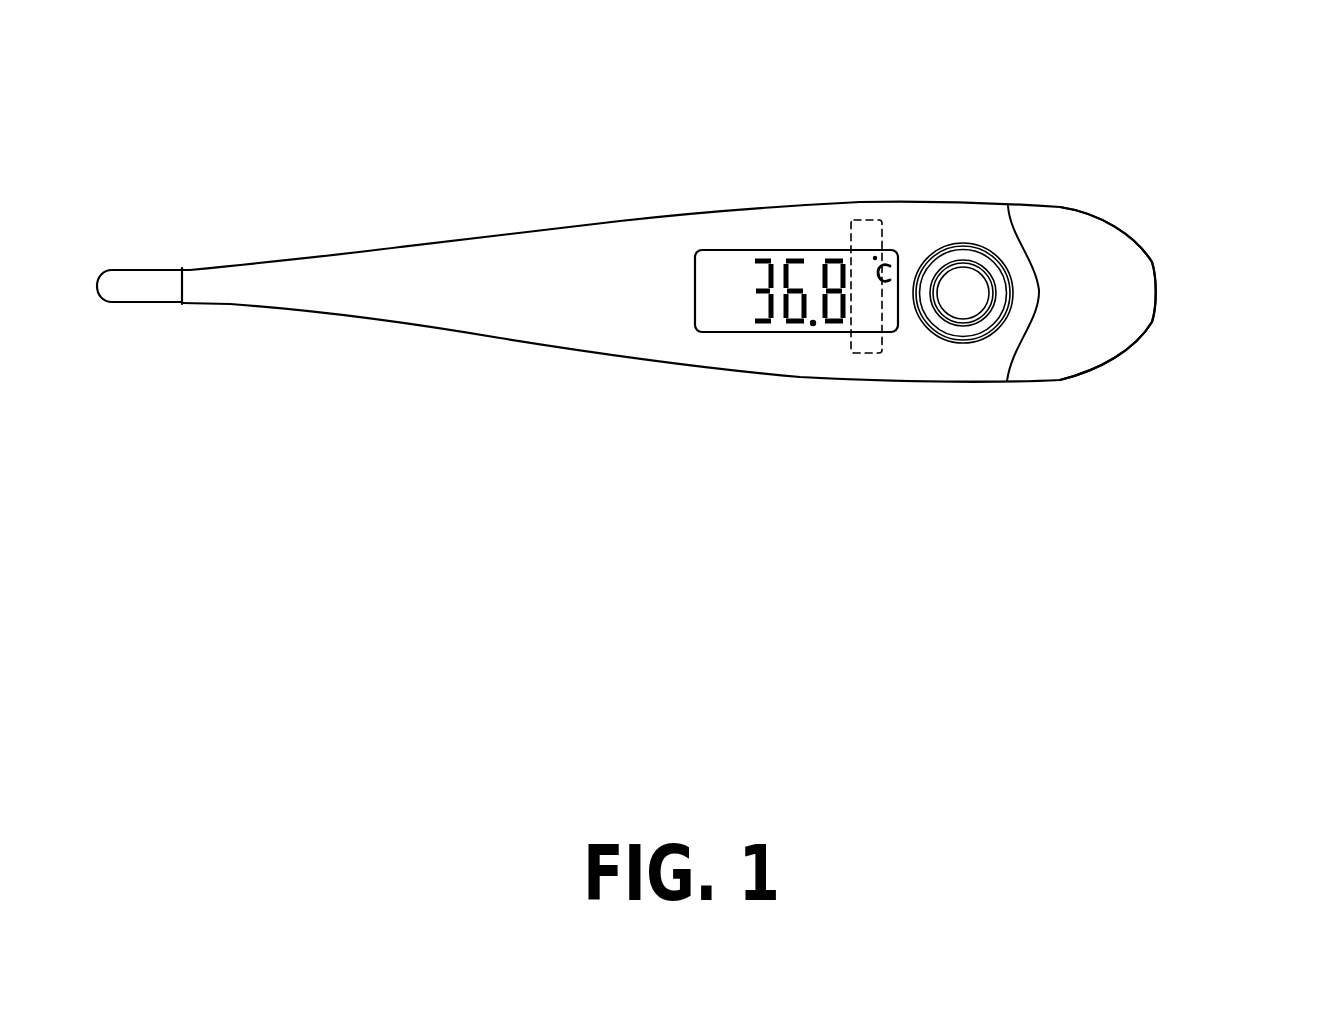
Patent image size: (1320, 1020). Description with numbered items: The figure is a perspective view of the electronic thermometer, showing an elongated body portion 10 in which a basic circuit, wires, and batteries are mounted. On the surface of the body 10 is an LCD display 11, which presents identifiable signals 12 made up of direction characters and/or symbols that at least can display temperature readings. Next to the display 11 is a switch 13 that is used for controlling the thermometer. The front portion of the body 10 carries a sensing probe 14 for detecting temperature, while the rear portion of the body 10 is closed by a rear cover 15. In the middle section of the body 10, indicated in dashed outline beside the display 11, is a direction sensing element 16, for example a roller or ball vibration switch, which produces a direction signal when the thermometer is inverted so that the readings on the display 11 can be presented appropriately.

The body portion 10 is at (623, 232).
The LCD display 11 is at (718, 312).
The identifiable signals 12 is at (795, 324).
The switch 13 is at (962, 297).
The sensing probe 14 is at (143, 293).
The rear cover 15 is at (1133, 262).
The direction sensing element 16 is at (878, 225).